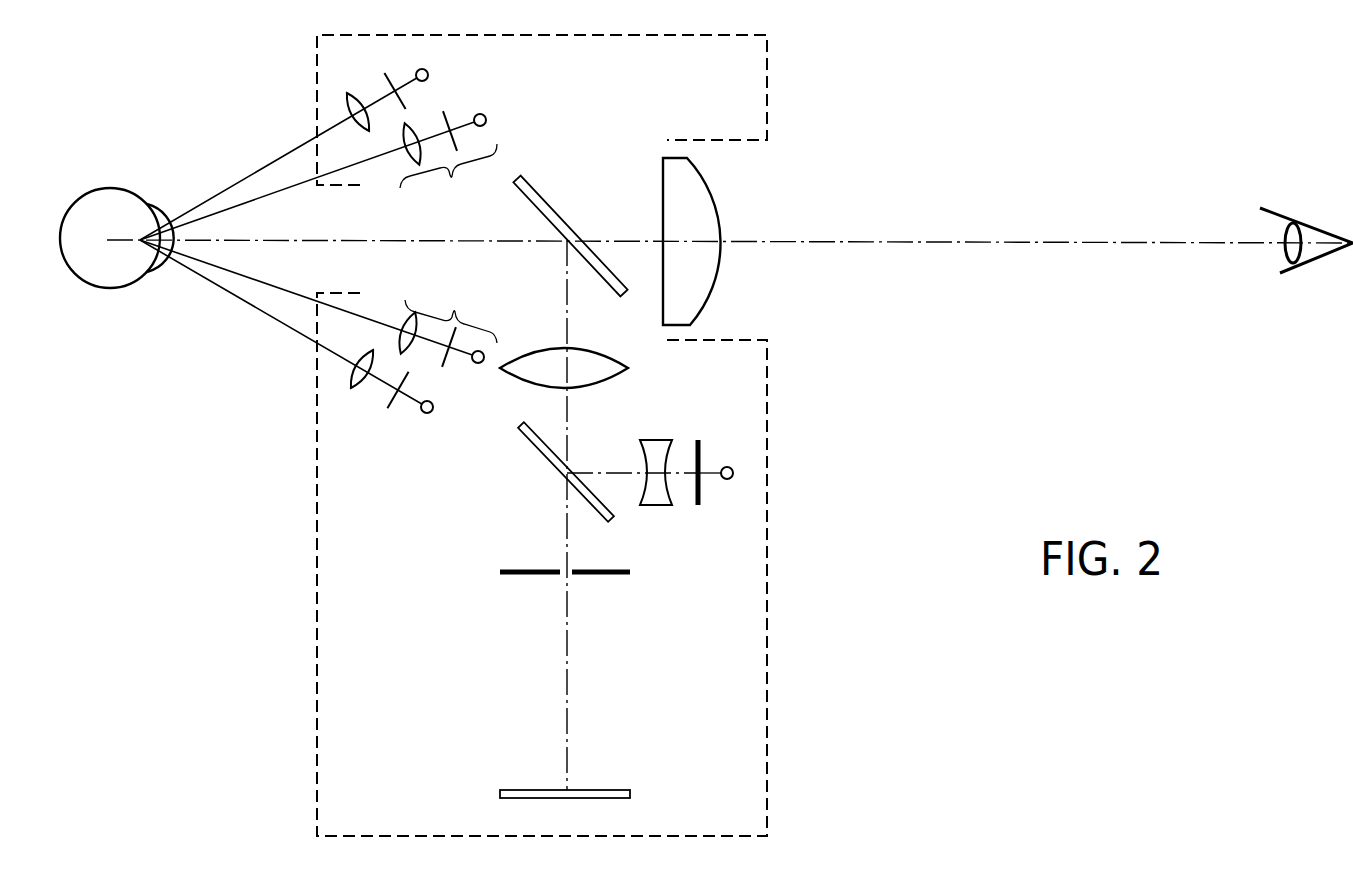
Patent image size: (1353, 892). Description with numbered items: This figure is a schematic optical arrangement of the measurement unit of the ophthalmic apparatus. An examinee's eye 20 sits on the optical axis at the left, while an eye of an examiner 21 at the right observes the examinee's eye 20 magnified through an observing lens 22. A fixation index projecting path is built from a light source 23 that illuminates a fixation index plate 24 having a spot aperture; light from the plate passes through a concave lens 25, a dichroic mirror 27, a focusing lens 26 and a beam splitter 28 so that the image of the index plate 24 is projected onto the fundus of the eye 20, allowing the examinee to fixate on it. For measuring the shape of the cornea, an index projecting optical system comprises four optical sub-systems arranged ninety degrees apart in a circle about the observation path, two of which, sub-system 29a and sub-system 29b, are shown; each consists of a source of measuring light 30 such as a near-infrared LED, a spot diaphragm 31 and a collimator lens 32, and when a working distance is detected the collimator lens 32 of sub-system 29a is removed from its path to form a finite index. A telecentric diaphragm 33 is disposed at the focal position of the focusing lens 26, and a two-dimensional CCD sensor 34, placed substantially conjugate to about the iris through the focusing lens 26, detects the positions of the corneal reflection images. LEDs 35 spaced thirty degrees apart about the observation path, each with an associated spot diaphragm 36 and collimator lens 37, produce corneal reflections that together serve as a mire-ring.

The examinee's eye 20 is at (118, 263).
The eye of an examiner 21 is at (1313, 253).
The observing lens 22 is at (700, 293).
The light source 23 is at (747, 445).
The fixation index plate 24 is at (698, 505).
The concave lens 25 is at (657, 500).
The focusing lens 26 is at (610, 373).
The dichroic mirror 27 is at (548, 455).
The beam splitter 28 is at (558, 222).
The optical sub-system 29a is at (448, 186).
The optical sub-system 29b is at (451, 303).
The source of measuring light 30 is at (487, 120).
The spot diaphragm 31 is at (447, 120).
The collimator lens 32 is at (410, 130).
The telecentric diaphragm 33 is at (617, 575).
The two-dimensional CCD sensor 34 is at (610, 790).
The LEDs 35 is at (425, 414).
The spot diaphragm 36 is at (396, 405).
The collimator lens 37 is at (351, 387).